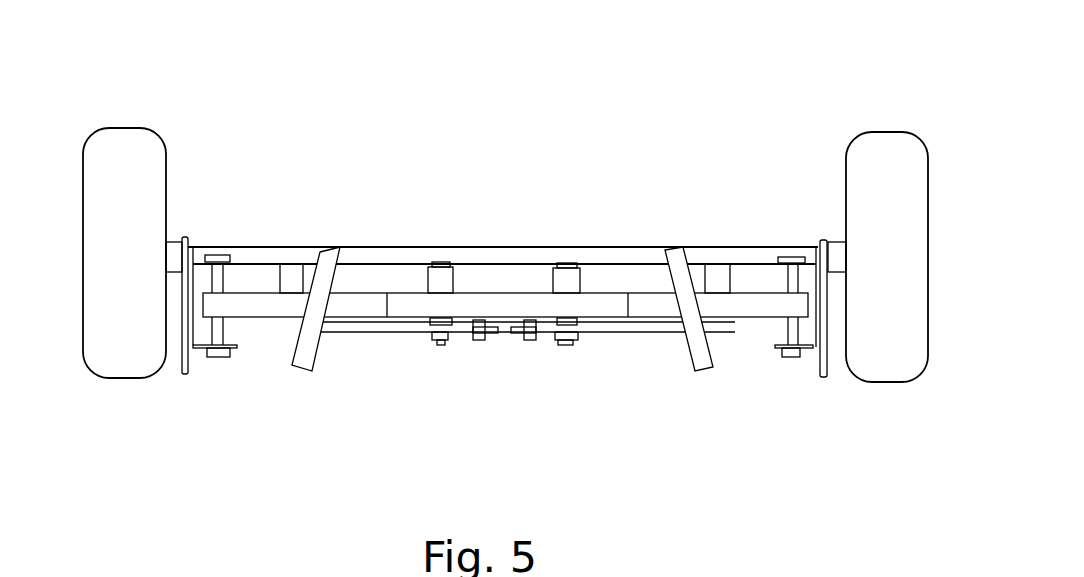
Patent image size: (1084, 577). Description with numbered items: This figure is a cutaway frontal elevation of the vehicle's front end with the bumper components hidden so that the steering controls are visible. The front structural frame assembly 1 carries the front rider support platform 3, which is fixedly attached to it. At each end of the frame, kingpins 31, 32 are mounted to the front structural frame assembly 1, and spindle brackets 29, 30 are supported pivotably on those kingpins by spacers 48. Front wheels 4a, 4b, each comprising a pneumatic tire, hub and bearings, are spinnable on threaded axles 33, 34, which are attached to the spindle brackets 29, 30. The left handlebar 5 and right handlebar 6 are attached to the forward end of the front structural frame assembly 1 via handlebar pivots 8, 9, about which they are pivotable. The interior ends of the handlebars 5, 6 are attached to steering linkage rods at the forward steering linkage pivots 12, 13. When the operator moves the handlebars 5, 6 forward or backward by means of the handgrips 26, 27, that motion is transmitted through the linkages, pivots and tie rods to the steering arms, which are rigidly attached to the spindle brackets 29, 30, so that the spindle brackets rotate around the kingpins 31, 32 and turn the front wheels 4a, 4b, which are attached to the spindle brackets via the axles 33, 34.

The front structural frame assembly 1 is at (503, 282).
The front rider support platform 3 is at (373, 263).
The front wheel 4a is at (860, 155).
The front wheel 4b is at (107, 143).
The left handlebar 5 is at (628, 330).
The right handlebar 6 is at (360, 333).
The handlebar pivot 8 is at (565, 343).
The handlebar pivot 9 is at (442, 343).
The forward steering linkage pivot 12 is at (528, 340).
The forward steering linkage pivot 13 is at (480, 340).
The handgrip 26 is at (705, 360).
The handgrip 27 is at (305, 363).
The spindle bracket 29 is at (825, 377).
The spindle bracket 30 is at (188, 372).
The kingpin 31 is at (793, 353).
The kingpin 32 is at (218, 357).
The threaded axle 33 is at (840, 255).
The threaded axle 34 is at (173, 240).
The spacer 48 is at (213, 333).